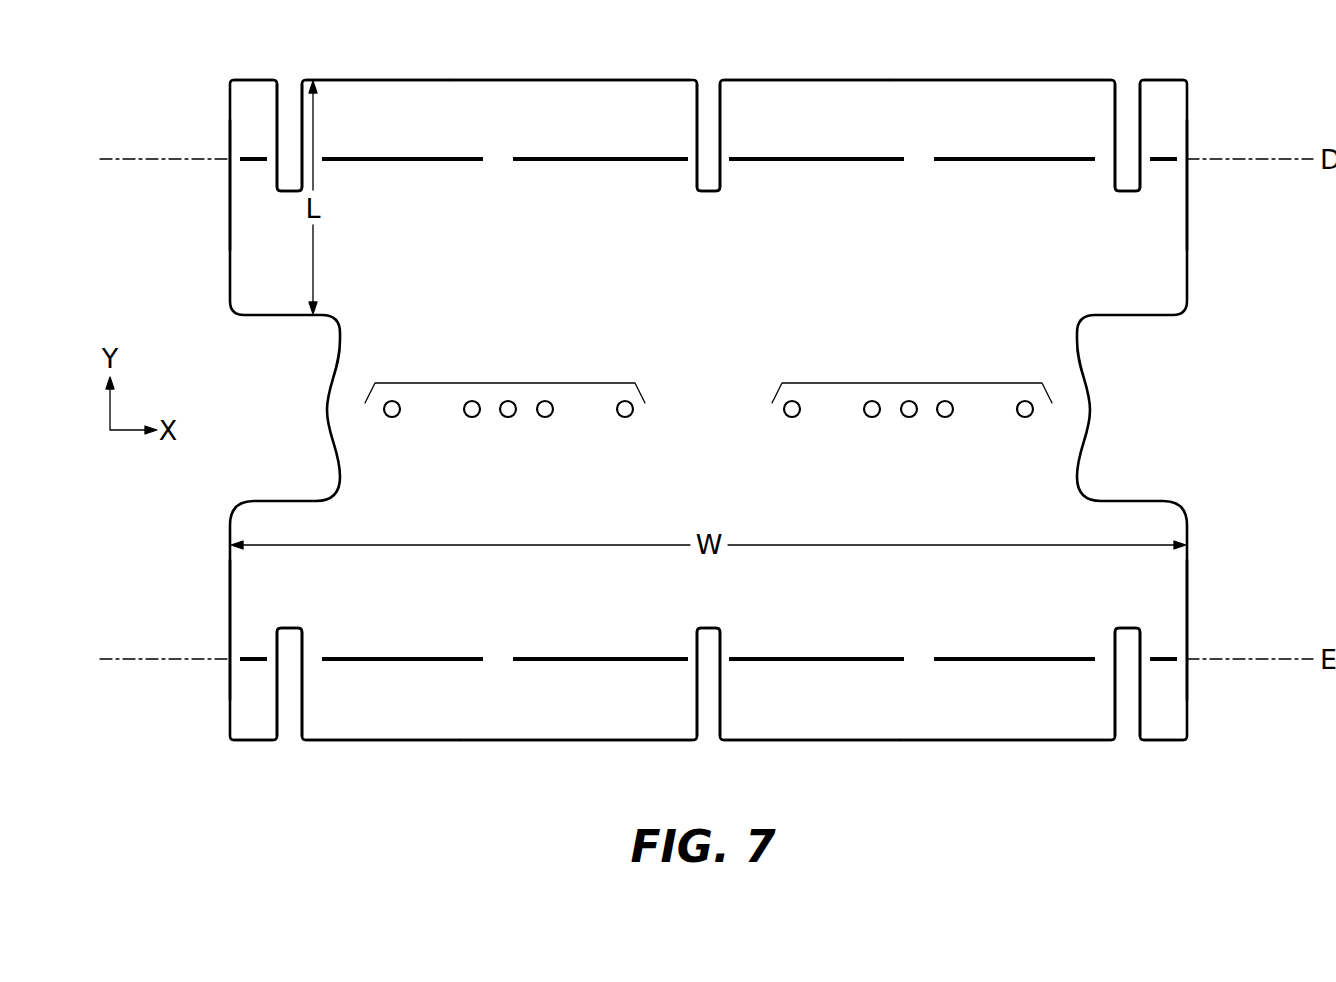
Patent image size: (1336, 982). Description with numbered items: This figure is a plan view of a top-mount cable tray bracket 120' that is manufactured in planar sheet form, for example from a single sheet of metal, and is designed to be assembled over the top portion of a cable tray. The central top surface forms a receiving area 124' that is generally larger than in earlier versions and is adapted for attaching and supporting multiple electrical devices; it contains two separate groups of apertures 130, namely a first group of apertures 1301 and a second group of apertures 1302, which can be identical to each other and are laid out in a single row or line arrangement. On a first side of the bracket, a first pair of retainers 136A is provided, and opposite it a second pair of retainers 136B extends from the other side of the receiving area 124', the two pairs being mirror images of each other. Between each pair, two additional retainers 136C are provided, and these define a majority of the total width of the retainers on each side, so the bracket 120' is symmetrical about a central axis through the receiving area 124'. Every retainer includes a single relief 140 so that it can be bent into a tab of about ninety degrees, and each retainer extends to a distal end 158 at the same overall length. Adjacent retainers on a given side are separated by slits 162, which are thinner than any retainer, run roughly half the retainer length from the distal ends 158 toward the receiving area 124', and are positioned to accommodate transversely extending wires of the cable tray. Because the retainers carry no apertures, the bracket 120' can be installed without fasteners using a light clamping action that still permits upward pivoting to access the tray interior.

The bracket 120' is at (98, 46).
The receiving area 124' is at (708, 410).
The group of apertures 130 is at (708, 370).
The first group of apertures 1301 is at (490, 383).
The second group of apertures 1302 is at (889, 383).
The first pair of retainers 136A is at (233, 108).
The second pair of retainers 136B is at (236, 713).
The additional retainer 136C is at (525, 98).
The relief 140 is at (257, 164).
The distal end 158 is at (260, 80).
The slit 162 is at (278, 104).